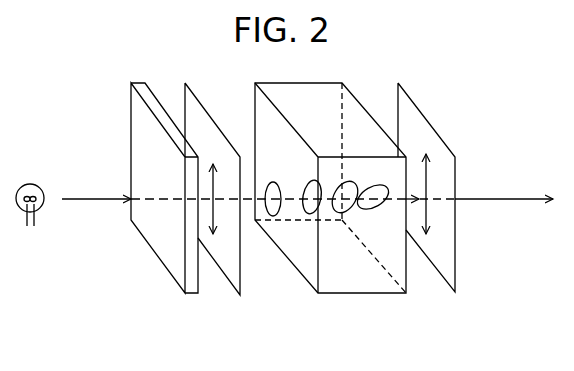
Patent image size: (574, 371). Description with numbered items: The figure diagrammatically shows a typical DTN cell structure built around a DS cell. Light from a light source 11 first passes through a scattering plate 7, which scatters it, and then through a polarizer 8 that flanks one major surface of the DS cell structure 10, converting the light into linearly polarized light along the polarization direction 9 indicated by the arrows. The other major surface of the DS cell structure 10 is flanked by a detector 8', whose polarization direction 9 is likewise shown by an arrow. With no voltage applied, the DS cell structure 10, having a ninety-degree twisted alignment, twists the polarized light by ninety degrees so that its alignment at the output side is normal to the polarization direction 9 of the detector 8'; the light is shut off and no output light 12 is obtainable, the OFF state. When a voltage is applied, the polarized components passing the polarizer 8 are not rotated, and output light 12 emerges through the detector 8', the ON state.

The scattering plate 7 is at (157, 262).
The polarizer 8 is at (212, 215).
The detector 8' is at (426, 215).
The polarization direction 9 is at (215, 179).
The DS cell structure 10 is at (356, 296).
The light source 11 is at (43, 186).
The output light 12 is at (518, 198).